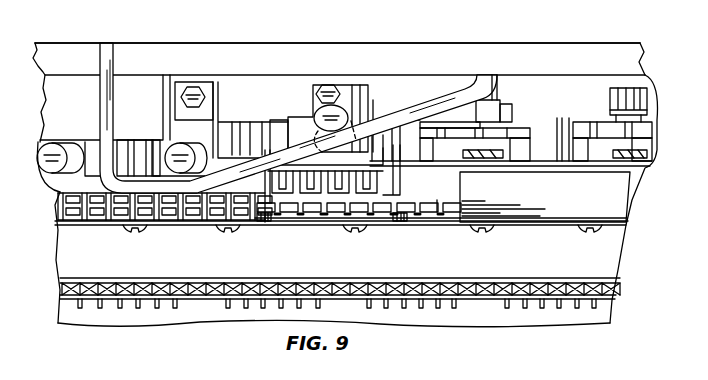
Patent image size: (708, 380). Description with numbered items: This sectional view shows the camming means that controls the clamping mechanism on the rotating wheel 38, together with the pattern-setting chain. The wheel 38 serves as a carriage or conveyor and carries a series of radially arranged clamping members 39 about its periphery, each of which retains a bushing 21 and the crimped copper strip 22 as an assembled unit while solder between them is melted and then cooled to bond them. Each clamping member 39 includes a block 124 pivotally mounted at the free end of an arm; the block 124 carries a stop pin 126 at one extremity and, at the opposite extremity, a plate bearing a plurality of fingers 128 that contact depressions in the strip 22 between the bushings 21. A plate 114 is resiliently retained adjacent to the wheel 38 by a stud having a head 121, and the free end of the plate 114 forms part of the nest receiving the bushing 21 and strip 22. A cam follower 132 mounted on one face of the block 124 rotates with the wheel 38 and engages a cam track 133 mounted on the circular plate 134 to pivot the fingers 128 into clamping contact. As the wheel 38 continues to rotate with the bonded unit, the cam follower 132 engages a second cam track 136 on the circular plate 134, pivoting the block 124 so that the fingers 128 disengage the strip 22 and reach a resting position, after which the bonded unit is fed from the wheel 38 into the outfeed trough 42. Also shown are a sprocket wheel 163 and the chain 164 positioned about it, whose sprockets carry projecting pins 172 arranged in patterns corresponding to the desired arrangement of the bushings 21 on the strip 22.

The bushing 21 is at (437, 200).
The crimped copper strip 22 is at (374, 207).
The wheel 38 is at (643, 166).
The clamping member 39 is at (45, 135).
The outfeed trough 42 is at (461, 187).
The plate 114 is at (262, 226).
The head 121 is at (126, 230).
The block 124 is at (358, 115).
The stop pin 126 is at (205, 99).
The fingers 128 is at (206, 222).
The cam follower 132 is at (80, 140).
The cam track 133 is at (147, 80).
The circular plate 134 is at (417, 43).
The cam track 136 is at (103, 92).
The sprocket wheel 163 is at (236, 279).
The chain 164 is at (425, 278).
The pins 172 is at (503, 303).